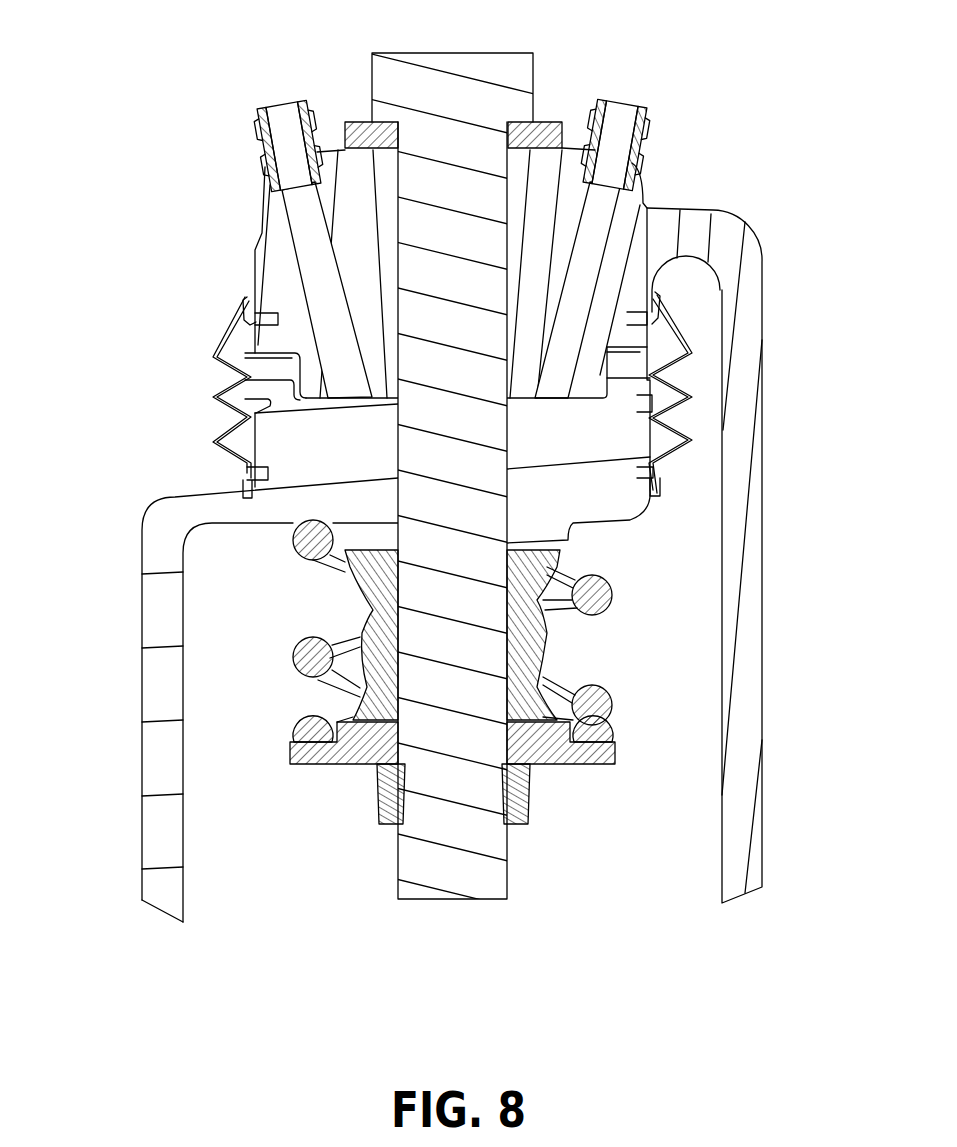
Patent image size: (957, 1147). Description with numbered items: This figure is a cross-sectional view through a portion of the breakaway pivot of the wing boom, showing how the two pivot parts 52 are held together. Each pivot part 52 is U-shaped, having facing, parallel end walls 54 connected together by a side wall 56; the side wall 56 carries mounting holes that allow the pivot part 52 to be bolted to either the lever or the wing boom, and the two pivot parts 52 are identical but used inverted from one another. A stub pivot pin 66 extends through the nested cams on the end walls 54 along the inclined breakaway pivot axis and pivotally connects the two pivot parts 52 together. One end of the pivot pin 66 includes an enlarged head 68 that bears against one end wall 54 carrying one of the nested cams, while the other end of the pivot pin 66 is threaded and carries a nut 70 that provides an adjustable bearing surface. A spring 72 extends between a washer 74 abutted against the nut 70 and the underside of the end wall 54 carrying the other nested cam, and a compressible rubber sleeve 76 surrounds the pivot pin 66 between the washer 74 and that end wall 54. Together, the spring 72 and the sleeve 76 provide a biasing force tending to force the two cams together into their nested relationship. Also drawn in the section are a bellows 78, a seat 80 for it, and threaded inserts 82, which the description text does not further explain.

The pivot part 52 is at (128, 589).
The end wall 54 is at (570, 166).
The side wall 56 is at (738, 474).
The stub pivot pin 66 is at (470, 652).
The enlarged head 68 is at (507, 72).
The nut 70 is at (520, 797).
The spring 72 is at (603, 702).
The washer 74 is at (347, 753).
The compressible rubber sleeve 76 is at (363, 600).
The bellows 78 is at (214, 356).
The bellows seat groove 80 is at (255, 366).
The threaded insert 82 is at (268, 110).